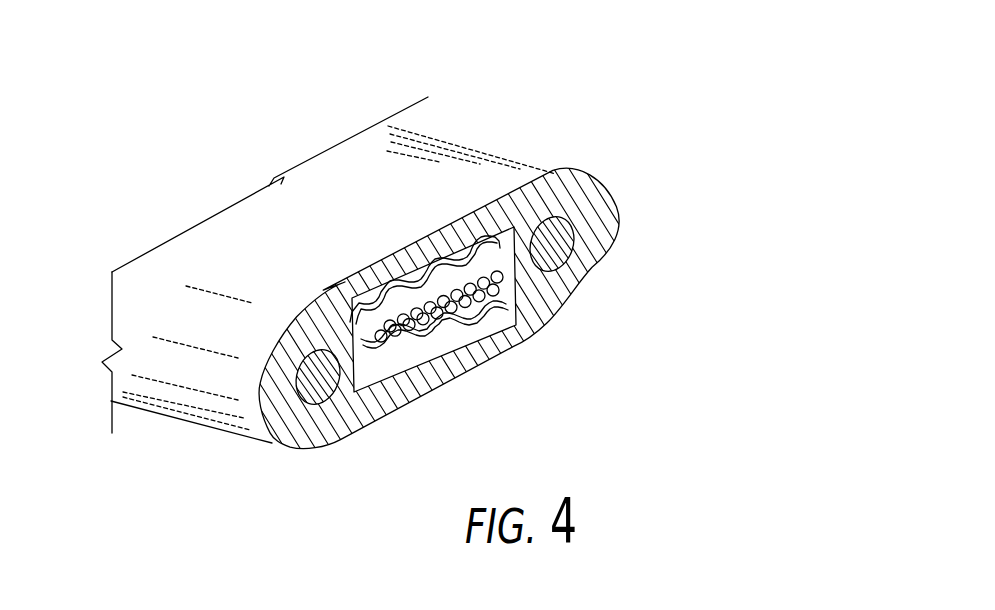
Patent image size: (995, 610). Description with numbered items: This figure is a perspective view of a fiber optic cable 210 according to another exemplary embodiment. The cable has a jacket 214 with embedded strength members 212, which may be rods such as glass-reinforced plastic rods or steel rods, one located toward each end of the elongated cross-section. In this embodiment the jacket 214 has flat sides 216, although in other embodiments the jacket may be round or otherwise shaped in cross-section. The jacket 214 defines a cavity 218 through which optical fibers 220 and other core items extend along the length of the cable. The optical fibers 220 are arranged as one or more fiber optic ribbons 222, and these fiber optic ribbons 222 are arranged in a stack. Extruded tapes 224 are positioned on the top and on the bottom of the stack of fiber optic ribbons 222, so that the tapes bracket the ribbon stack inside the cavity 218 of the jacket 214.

The fiber optic cable 210 is at (280, 140).
The strength members 212 is at (575, 247).
The jacket 214 is at (315, 432).
The flat sides 216 is at (514, 366).
The cavity 218 is at (515, 231).
The optical fibers 220 is at (403, 316).
The fiber optic ribbons 222 is at (358, 323).
The extruded tapes 224 is at (345, 282).